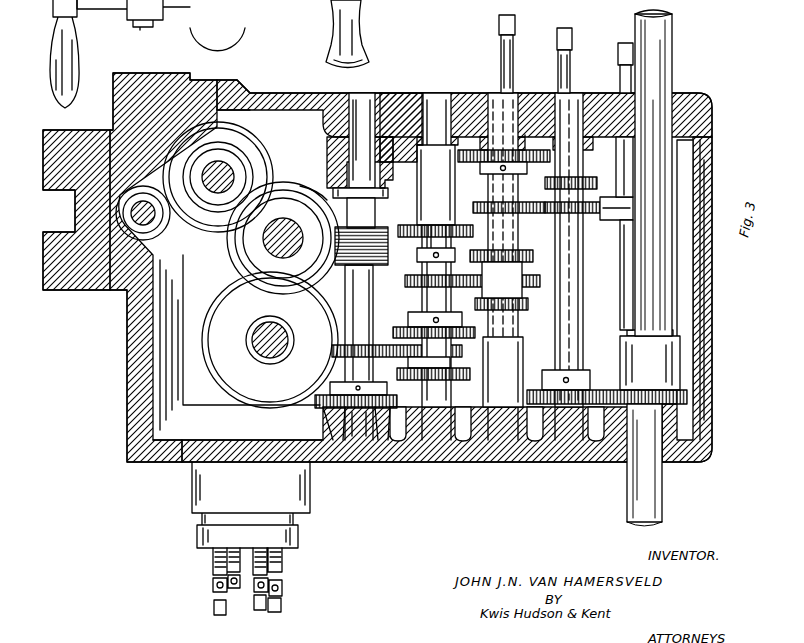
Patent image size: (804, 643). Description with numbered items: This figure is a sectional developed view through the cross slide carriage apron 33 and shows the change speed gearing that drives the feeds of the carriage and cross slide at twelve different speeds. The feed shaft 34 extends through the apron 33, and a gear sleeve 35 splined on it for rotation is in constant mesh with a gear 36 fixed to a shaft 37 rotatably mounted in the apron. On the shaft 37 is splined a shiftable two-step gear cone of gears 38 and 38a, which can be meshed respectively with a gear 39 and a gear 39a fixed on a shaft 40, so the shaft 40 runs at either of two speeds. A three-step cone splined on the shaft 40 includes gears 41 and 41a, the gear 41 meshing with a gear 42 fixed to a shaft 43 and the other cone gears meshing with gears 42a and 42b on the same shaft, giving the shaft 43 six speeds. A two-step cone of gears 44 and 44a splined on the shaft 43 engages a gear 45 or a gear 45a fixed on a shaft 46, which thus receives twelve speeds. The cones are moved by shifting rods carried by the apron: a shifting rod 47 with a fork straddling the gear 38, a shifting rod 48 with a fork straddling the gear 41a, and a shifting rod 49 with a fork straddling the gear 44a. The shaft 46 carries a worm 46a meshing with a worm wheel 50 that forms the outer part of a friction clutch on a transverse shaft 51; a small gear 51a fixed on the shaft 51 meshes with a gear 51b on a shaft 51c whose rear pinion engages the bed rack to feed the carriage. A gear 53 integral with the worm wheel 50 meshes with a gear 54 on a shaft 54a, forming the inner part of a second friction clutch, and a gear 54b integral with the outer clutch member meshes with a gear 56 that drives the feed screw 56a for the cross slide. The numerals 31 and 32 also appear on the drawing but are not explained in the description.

The housing 31 is at (138, 395).
The mounting flange 32 is at (70, 290).
The cross slide carriage apron 33 is at (410, 98).
The feed shaft 34 is at (672, 60).
The gear sleeve 35 is at (635, 378).
The gear 36 is at (535, 410).
The shaft 37 is at (578, 318).
The gear 38 is at (592, 215).
The gear 38a is at (590, 180).
The gear 39 is at (478, 202).
The gear 39a is at (470, 150).
The shaft 40 is at (515, 350).
The gear 41 is at (518, 318).
The gear 41a is at (480, 290).
The gear 42 is at (421, 266).
The gear 42a is at (428, 260).
The gear 42b is at (414, 226).
The shaft 43 is at (428, 176).
The gear 44 is at (455, 380).
The gear 44a is at (370, 345).
The gear 45 is at (393, 410).
The gear 45a is at (333, 384).
The shaft 46 is at (355, 314).
The worm 46a is at (333, 240).
The shifting rod 47 is at (620, 70).
The shifting rod 48 is at (560, 50).
The shifting rod 49 is at (500, 45).
The worm wheel 50 is at (300, 200).
The shaft 51 is at (276, 234).
The small gear 51a is at (268, 334).
The gear 51b is at (222, 396).
The shaft 51c is at (262, 350).
The gear 53 is at (252, 324).
The gear 54 is at (247, 160).
The shaft 54a is at (214, 192).
The gear 54b is at (247, 100).
The gear 56 is at (165, 225).
The feed screw 56a is at (150, 225).